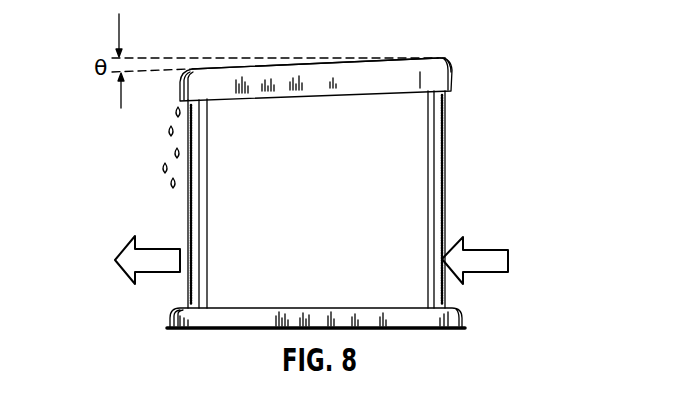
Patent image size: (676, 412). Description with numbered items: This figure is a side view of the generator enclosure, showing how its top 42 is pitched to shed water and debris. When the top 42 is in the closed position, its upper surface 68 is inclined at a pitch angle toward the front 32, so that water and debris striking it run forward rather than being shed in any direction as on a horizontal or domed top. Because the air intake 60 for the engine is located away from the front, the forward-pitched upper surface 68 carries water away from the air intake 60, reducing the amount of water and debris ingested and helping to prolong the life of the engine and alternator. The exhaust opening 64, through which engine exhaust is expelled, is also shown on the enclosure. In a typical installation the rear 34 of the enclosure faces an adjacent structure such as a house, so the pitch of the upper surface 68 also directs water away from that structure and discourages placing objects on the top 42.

The upper surface 68 is at (237, 68).
The top 42 is at (371, 74).
The rear 34 is at (445, 122).
The front 32 is at (187, 138).
The exhaust opening 64 is at (188, 245).
The air intake 60 is at (445, 240).